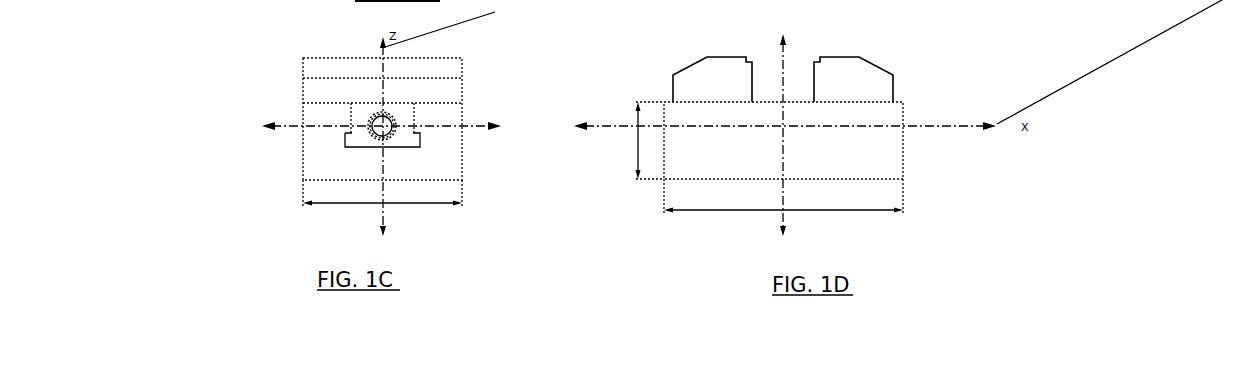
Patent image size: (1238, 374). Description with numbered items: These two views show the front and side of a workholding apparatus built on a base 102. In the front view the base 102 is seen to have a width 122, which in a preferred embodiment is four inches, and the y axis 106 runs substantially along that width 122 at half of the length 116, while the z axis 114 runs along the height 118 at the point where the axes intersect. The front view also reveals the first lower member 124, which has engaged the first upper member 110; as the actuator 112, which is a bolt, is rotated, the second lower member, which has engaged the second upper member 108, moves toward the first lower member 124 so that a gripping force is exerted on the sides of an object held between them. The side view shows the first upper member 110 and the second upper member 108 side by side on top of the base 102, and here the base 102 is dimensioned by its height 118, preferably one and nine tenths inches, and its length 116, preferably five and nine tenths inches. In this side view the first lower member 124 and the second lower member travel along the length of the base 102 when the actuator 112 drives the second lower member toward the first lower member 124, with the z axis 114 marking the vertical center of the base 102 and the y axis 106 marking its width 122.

In FIG. 1C, the base 102 is at (303, 138).
In FIG. 1D, the base 102 is at (770, 179).
In FIG. 1C, the y axis 106 is at (473, 125).
In FIG. 1D, the second upper member 108 is at (865, 85).
In FIG. 1C, the first upper member 110 is at (325, 88).
In FIG. 1D, the first upper member 110 is at (722, 80).
In FIG. 1C, the actuator 112 is at (371, 130).
In FIG. 1D, the z axis 114 is at (783, 197).
In FIG. 1D, the length 116 is at (820, 209).
In FIG. 1D, the height 118 is at (638, 148).
In FIG. 1C, the width 122 is at (398, 203).
In FIG. 1C, the first lower member 124 is at (400, 141).